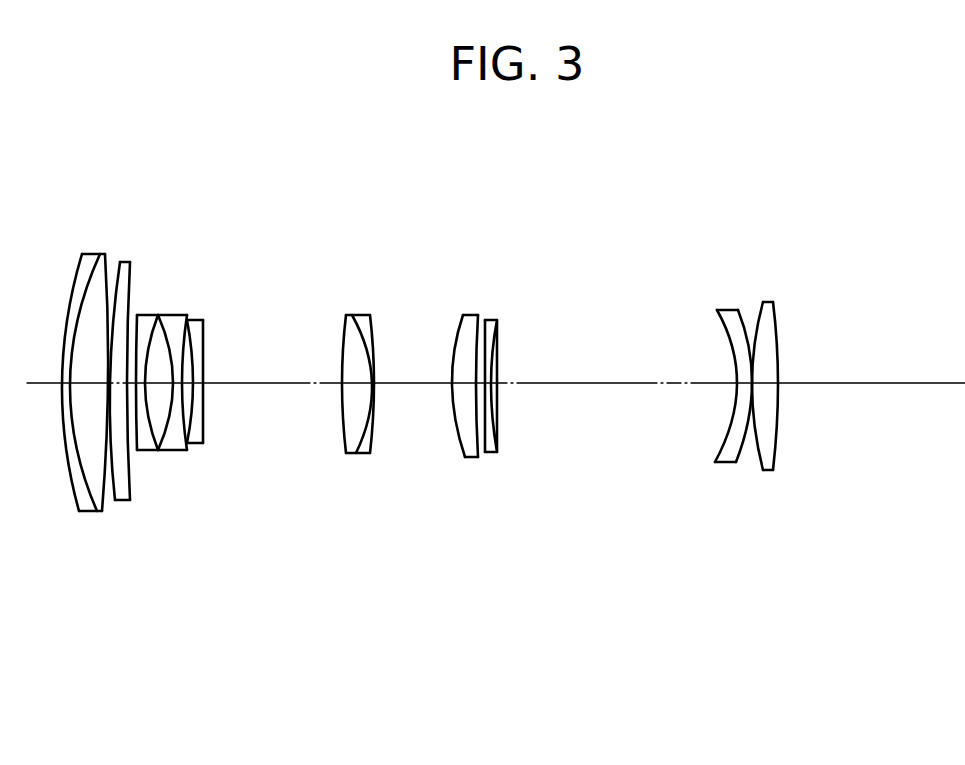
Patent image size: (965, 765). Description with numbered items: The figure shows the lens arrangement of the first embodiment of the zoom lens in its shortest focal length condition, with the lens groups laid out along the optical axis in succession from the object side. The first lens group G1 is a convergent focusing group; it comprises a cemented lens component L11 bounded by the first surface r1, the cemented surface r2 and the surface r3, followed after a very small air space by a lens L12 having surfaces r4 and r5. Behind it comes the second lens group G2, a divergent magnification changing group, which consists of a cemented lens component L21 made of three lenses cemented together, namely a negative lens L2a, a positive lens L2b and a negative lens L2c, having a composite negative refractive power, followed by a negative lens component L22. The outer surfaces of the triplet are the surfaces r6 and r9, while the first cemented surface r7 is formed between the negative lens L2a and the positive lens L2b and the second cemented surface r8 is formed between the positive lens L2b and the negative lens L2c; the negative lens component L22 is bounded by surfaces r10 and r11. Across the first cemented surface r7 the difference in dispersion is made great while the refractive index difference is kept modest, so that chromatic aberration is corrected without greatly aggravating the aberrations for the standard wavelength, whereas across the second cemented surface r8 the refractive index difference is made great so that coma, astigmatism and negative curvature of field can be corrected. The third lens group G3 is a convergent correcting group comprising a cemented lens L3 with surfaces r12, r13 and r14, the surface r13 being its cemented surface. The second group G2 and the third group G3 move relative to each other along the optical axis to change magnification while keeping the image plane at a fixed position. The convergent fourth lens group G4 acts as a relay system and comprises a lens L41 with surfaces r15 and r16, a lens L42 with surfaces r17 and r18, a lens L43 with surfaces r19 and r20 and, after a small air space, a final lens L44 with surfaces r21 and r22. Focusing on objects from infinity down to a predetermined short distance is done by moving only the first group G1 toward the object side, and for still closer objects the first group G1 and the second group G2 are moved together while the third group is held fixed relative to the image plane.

The first lens group G1 is at (135, 183).
The second lens group G2 is at (242, 183).
The third lens group G3 is at (355, 370).
The fourth lens group G4 is at (797, 250).
The first lens component of first group L11 is at (62, 234).
The second lens component of first group L12 is at (125, 260).
The cemented lens component L21 is at (137, 234).
The negative lens L2a is at (152, 313).
The positive lens L2b is at (158, 313).
The negative lens L2c is at (182, 313).
The negative lens component L22 is at (200, 320).
The lens component of third group L3 is at (332, 304).
The first lens component of fourth group L41 is at (470, 315).
The second lens component of fourth group L42 is at (490, 320).
The third lens component of fourth group L43 is at (728, 310).
The fourth lens component of fourth group L44 is at (770, 302).
The first lens surface r1 is at (76, 500).
The second lens surface r2 is at (90, 512).
The third lens surface r3 is at (108, 505).
The fourth lens surface r4 is at (116, 503).
The fifth lens surface r5 is at (130, 500).
The sixth lens surface r6 is at (136, 455).
The first cemented surface r7 is at (149, 452).
The second cemented surface r8 is at (170, 451).
The ninth lens surface r9 is at (186, 449).
The tenth lens surface r10 is at (196, 446).
The eleventh lens surface r11 is at (205, 432).
The twelfth lens surface r12 is at (343, 440).
The thirteenth lens surface r13 is at (360, 441).
The fourteenth lens surface r14 is at (371, 440).
The fifteenth lens surface r15 is at (457, 438).
The sixteenth lens surface r16 is at (474, 446).
The seventeenth lens surface r17 is at (488, 445).
The eighteenth lens surface r18 is at (502, 438).
The nineteenth lens surface r19 is at (718, 444).
The twentieth lens surface r20 is at (724, 463).
The twenty-first lens surface r21 is at (752, 443).
The twenty-second lens surface r22 is at (778, 441).